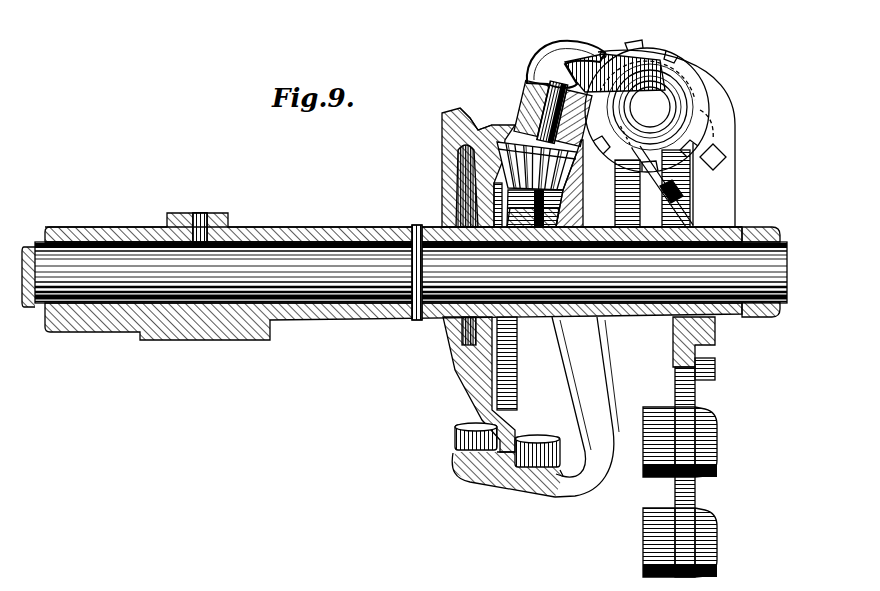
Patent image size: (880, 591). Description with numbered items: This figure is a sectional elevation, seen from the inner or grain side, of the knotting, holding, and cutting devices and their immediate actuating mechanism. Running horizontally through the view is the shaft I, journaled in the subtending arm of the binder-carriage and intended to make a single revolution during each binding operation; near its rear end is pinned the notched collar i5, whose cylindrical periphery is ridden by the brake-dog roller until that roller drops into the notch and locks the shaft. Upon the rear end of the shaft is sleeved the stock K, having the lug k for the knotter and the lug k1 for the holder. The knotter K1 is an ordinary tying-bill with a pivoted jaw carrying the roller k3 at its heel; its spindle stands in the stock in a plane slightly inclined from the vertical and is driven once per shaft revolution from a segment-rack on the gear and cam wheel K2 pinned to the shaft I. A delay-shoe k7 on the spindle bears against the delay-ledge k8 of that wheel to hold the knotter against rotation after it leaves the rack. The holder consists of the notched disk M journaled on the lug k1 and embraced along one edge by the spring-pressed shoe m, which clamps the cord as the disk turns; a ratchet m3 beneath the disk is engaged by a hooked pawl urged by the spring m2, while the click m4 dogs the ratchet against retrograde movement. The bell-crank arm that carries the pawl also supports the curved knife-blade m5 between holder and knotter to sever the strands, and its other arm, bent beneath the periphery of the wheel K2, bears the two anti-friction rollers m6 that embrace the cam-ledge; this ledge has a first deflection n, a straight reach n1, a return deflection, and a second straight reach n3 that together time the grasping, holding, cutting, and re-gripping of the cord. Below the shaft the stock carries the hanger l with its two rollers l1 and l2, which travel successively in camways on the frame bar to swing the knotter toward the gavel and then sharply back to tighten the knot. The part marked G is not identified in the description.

The shaft I is at (404, 276).
The barrel casing G is at (268, 227).
The spring m2 is at (553, 250).
The notched collar i5 is at (413, 226).
The gear and cam wheel K2 is at (442, 143).
The straight reach n1 is at (442, 177).
The delay-ledge k8 is at (477, 124).
The lug k is at (520, 99).
The delay-shoe k7 is at (518, 126).
The roller k3 is at (532, 75).
The knotter K1 is at (577, 44).
The notched disk M is at (714, 78).
The curved knife-blade m5 is at (735, 127).
The spring-pressed shoe m is at (634, 42).
The ratchet m3 is at (647, 80).
The click m4 is at (652, 188).
The lug k1 is at (656, 176).
The stock K is at (600, 226).
The deflection n is at (462, 371).
The second straight reach n3 is at (520, 430).
The anti-friction rollers m6 is at (455, 436).
The hanger l is at (698, 406).
The anti-friction roller l1 is at (650, 407).
The anti-friction roller l2 is at (643, 522).